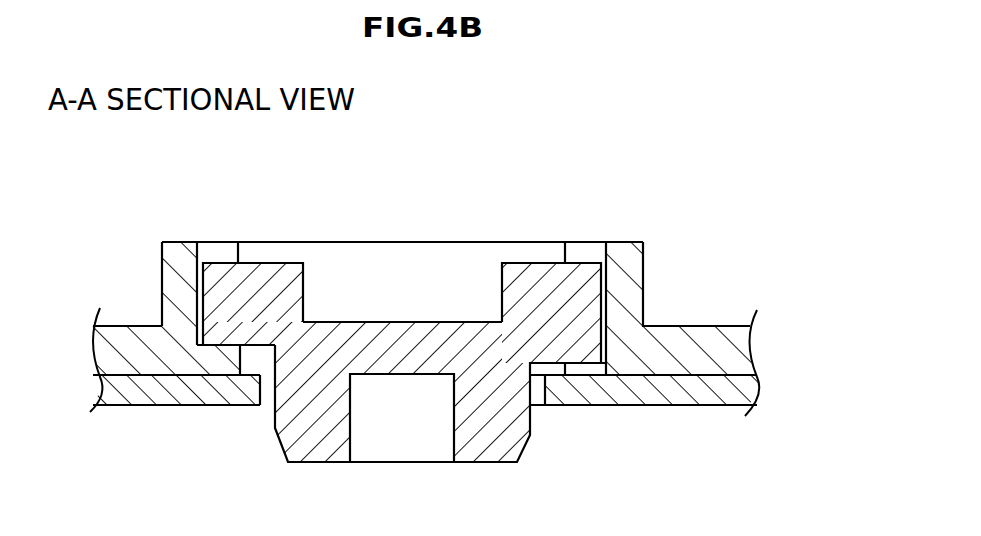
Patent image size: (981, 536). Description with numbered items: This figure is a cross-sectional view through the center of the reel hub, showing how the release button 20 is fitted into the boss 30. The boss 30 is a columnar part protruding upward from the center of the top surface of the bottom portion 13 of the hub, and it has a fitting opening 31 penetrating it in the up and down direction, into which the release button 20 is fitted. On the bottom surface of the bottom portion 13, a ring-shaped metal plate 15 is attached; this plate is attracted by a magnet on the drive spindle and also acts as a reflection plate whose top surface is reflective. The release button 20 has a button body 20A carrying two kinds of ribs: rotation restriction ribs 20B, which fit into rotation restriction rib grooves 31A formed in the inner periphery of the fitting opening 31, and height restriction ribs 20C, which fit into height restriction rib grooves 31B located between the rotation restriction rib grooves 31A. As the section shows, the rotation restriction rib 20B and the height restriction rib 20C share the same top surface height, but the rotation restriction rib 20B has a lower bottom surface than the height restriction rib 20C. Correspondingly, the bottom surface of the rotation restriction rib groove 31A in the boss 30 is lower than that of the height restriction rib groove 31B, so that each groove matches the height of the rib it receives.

The bottom portion 13 is at (123, 335).
The metal plate 15 is at (640, 395).
The release button 20 is at (443, 321).
The button body 20A is at (387, 345).
The rotation restriction rib 20B is at (543, 278).
The height restriction rib 20C is at (270, 275).
The boss 30 is at (633, 272).
The fitting opening 31 is at (247, 365).
The rotation restriction rib groove 31A is at (607, 262).
The height restriction rib groove 31B is at (198, 257).